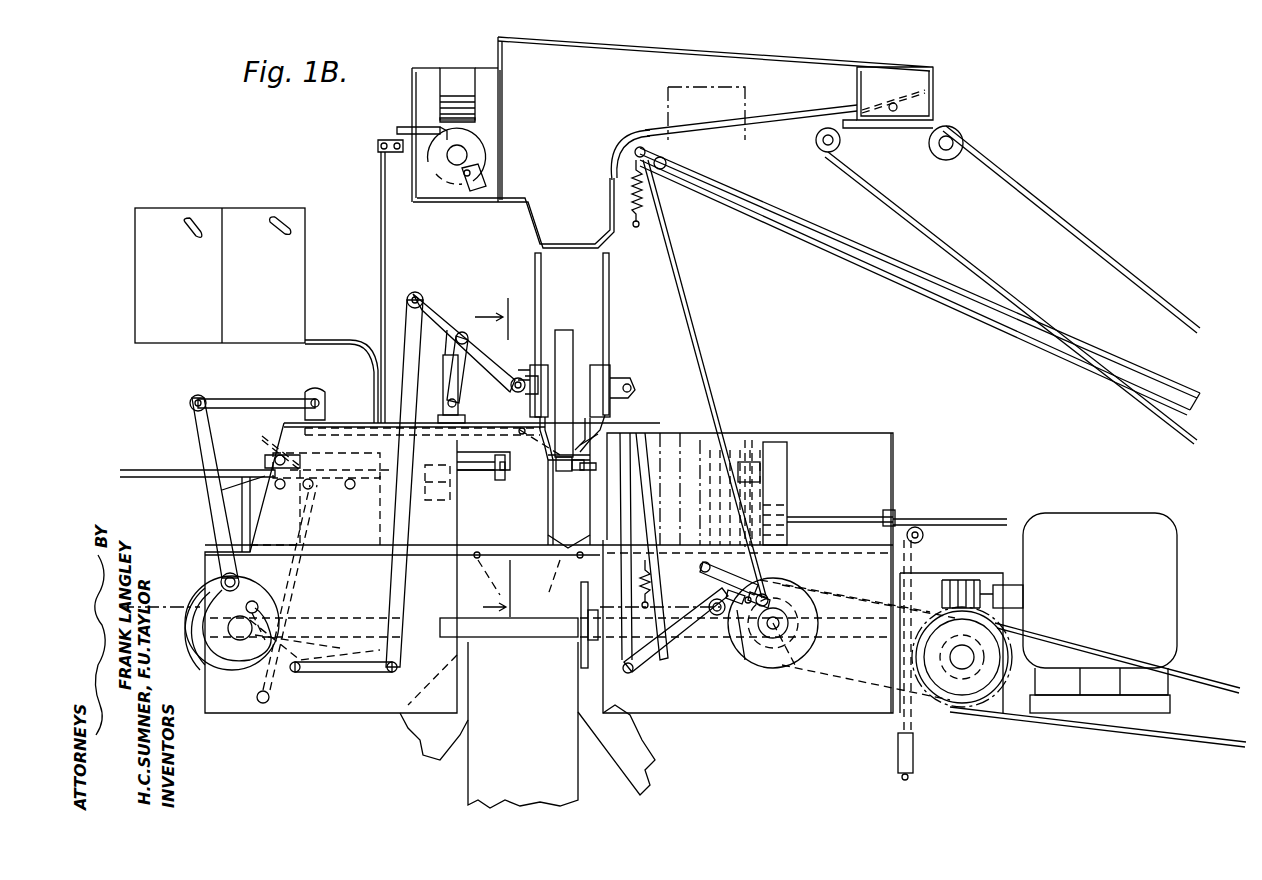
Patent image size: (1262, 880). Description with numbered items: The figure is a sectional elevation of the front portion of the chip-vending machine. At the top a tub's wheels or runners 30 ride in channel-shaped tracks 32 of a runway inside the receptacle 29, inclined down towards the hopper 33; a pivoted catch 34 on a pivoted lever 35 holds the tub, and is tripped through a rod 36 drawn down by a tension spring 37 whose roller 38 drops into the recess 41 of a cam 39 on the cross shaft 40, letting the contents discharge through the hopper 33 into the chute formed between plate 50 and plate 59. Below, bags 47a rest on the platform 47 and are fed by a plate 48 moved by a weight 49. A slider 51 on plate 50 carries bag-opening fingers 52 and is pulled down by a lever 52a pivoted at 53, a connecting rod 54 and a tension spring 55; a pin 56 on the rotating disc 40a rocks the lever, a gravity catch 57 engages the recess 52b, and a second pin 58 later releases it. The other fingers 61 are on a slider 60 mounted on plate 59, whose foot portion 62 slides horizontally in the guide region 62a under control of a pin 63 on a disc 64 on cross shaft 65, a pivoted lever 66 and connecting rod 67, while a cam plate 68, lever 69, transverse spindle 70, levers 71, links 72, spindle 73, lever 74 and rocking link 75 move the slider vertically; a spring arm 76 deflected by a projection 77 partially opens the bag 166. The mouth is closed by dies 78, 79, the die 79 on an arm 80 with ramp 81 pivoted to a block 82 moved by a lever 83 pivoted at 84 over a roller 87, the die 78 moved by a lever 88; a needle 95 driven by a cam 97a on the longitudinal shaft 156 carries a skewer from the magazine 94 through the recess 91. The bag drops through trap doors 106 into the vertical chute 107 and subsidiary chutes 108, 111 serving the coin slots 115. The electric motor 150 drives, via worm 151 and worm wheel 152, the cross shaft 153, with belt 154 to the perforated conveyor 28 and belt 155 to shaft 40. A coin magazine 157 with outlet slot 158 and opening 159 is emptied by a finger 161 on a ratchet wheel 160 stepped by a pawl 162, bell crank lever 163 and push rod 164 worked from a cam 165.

The perforated conveyor 28 is at (1083, 233).
The receptacle 29 is at (860, 67).
The wheels or runners 30 is at (895, 110).
The channel-shaped tracks 32 is at (780, 115).
The hopper 33 is at (535, 228).
The pivoted catch 34 is at (658, 152).
The pivoted lever 35 is at (668, 165).
The rod 36 is at (690, 305).
The tension spring 37 is at (655, 185).
The roller 38 is at (762, 598).
The cam 39 is at (770, 667).
The cross shaft 40 is at (780, 620).
The rotating disc 40a is at (790, 650).
The recess 41 is at (778, 615).
The platform 47 is at (846, 545).
The bags 47a is at (748, 440).
The plate 48 is at (790, 472).
The weight 49 is at (898, 755).
The plate 50 is at (609, 320).
The slider 51 is at (615, 372).
The bag-opening fingers 52 is at (590, 430).
The lever 52a is at (705, 620).
The recess 52b is at (726, 596).
The pivot 53 is at (717, 615).
The connecting rod 54 is at (632, 660).
The tension spring 55 is at (660, 493).
The pin 56 is at (818, 638).
The gravity catch 57 is at (723, 577).
The second pin 58 is at (745, 660).
The plate 59 is at (535, 280).
The slider 60 is at (508, 338).
The bag-opening fingers 61 is at (548, 466).
The foot portion 62 is at (470, 424).
The slide 62a is at (350, 432).
The pin 63 is at (258, 607).
The disc 64 is at (222, 645).
The cross shaft 65 is at (240, 640).
The pivoted lever 66 is at (240, 498).
The connecting rod 67 is at (255, 400).
The cam plate 68 is at (185, 610).
The lever 69 is at (300, 650).
The transverse spindle 70 is at (295, 680).
The levers 71 is at (350, 672).
The links 72 is at (430, 315).
The transverse spindle 73 is at (414, 292).
The lever 74 is at (443, 330).
The rocking link 75 is at (462, 358).
The spring arm 76 is at (530, 440).
The projection 77 is at (595, 440).
The die 78 is at (495, 475).
The die 79 is at (505, 470).
The arm 80 is at (290, 445).
The ramp 81 is at (375, 465).
The block 82 is at (270, 456).
The lever 83 is at (262, 505).
The pivot 84 is at (265, 704).
The roller 87 is at (440, 502).
The lever 88 is at (310, 536).
The recess 91 is at (497, 478).
The magazine 94 is at (563, 345).
The bag-piercing needle 95 is at (556, 470).
The cam 97a is at (581, 657).
The trap doors 106 is at (556, 572).
The vertical chute 107 is at (523, 725).
The subsidiary chute 108 is at (434, 707).
The subsidiary chute 111 is at (616, 750).
The coin slots 115 is at (278, 222).
The electric motor 150 is at (1090, 533).
The worm 151 is at (963, 580).
The worm wheel 152 is at (950, 705).
The cross shaft 153 is at (970, 654).
The belt 154 is at (1170, 738).
The belt 155 is at (870, 638).
The longitudinal shaft 156 is at (488, 623).
The magazine 157 is at (442, 82).
The outlet slot 158 is at (478, 120).
The opening 159 is at (502, 140).
The ratchet wheel 160 is at (448, 165).
The finger 161 is at (488, 180).
The pawl 162 is at (440, 128).
The bell crank lever 163 is at (378, 143).
The push rod 164 is at (381, 197).
The cam 165 is at (385, 630).
The bag 166 is at (480, 540).